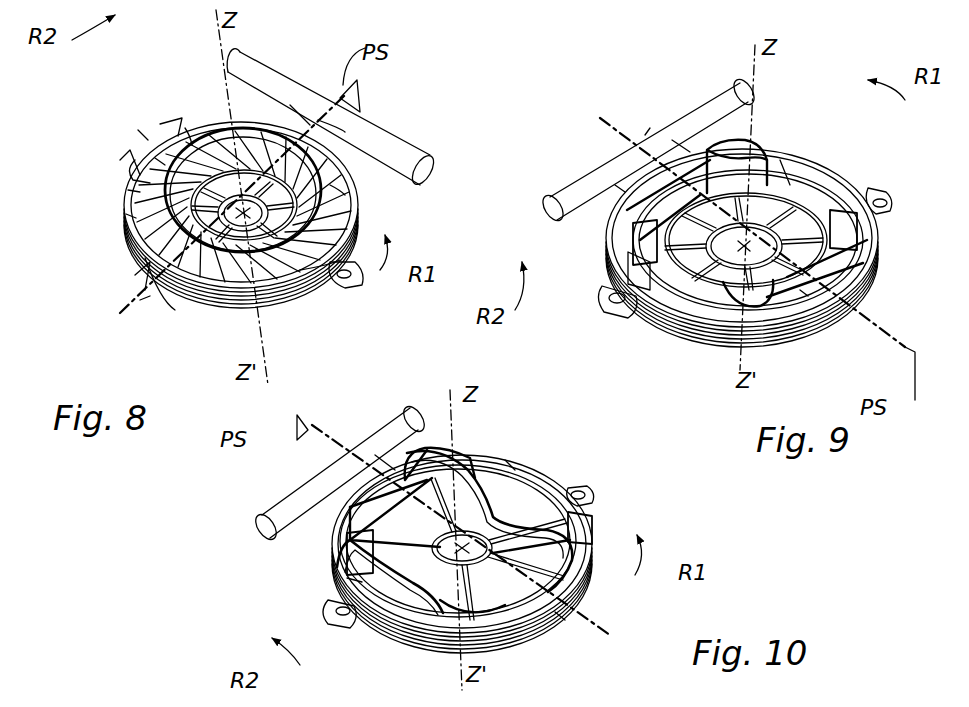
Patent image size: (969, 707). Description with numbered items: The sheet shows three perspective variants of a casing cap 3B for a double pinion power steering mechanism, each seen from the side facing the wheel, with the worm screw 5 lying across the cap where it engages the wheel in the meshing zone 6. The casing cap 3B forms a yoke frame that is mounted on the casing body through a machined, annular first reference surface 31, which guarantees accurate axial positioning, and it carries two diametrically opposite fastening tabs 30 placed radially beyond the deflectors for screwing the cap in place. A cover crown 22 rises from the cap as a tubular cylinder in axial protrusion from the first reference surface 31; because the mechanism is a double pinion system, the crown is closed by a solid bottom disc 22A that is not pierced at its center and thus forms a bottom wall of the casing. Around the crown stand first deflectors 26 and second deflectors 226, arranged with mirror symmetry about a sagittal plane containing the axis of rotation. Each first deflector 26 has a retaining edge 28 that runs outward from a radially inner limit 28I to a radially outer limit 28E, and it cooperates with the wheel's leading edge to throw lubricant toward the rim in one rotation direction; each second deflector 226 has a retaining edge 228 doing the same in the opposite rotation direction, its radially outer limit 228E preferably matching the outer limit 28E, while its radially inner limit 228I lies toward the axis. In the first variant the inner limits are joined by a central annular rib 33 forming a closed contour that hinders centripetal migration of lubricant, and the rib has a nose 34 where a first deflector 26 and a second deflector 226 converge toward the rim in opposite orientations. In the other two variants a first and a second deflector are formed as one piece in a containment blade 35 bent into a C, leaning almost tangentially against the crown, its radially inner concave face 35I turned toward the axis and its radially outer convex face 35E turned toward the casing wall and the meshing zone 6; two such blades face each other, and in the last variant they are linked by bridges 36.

In FIG. 8, the casing cap 3B is at (124, 246).
In FIG. 9, the casing cap 3B is at (880, 236).
In FIG. 10, the casing cap 3B is at (594, 584).
In FIG. 8, the worm screw 5 is at (428, 138).
In FIG. 9, the worm screw 5 is at (697, 115).
In FIG. 10, the worm screw 5 is at (265, 518).
In FIG. 8, the meshing zone 6 is at (300, 117).
In FIG. 9, the meshing zone 6 is at (680, 145).
In FIG. 10, the meshing zone 6 is at (385, 465).
In FIG. 8, the cover crown 22 is at (168, 138).
In FIG. 9, the cover crown 22 is at (793, 187).
In FIG. 10, the cover crown 22 is at (520, 497).
In FIG. 8, the solid bottom disc 22A is at (150, 208).
In FIG. 9, the solid bottom disc 22A is at (812, 222).
In FIG. 10, the solid bottom disc 22A is at (525, 600).
In FIG. 8, the first deflector 26 is at (212, 288).
In FIG. 9, the first deflector 26 is at (765, 148).
In FIG. 10, the first deflector 26 is at (480, 455).
In FIG. 8, the retaining edge 28 is at (175, 312).
In FIG. 9, the retaining edge 28 is at (790, 160).
In FIG. 10, the retaining edge 28 is at (510, 460).
In FIG. 8, the radially outer limit 28E is at (322, 275).
In FIG. 8, the radially inner limit 28I is at (350, 188).
In FIG. 8, the fastening tabs 30 is at (130, 166).
In FIG. 9, the fastening tabs 30 is at (626, 308).
In FIG. 10, the fastening tabs 30 is at (332, 610).
In FIG. 8, the first reference surface 31 is at (233, 298).
In FIG. 9, the first reference surface 31 is at (876, 272).
In FIG. 10, the first reference surface 31 is at (576, 618).
In FIG. 8, the central annular rib 33 is at (190, 130).
In FIG. 8, the nose 34 is at (345, 132).
In FIG. 9, the containment blade 35 is at (718, 150).
In FIG. 10, the containment blade 35 is at (437, 455).
In FIG. 9, the radially outer convex face 35E is at (620, 186).
In FIG. 10, the radially outer convex face 35E is at (560, 618).
In FIG. 9, the inner hood 35I is at (648, 130).
In FIG. 10, the bridges 36 is at (518, 520).
In FIG. 8, the second deflector 226 is at (181, 118).
In FIG. 9, the second deflector 226 is at (848, 215).
In FIG. 10, the second deflector 226 is at (582, 526).
In FIG. 8, the retaining edge 228 is at (140, 130).
In FIG. 9, the retaining edge 228 is at (645, 270).
In FIG. 10, the retaining edge 228 is at (350, 576).
In FIG. 8, the radially outer limit 228E is at (130, 216).
In FIG. 8, the inner notch 228I is at (160, 160).